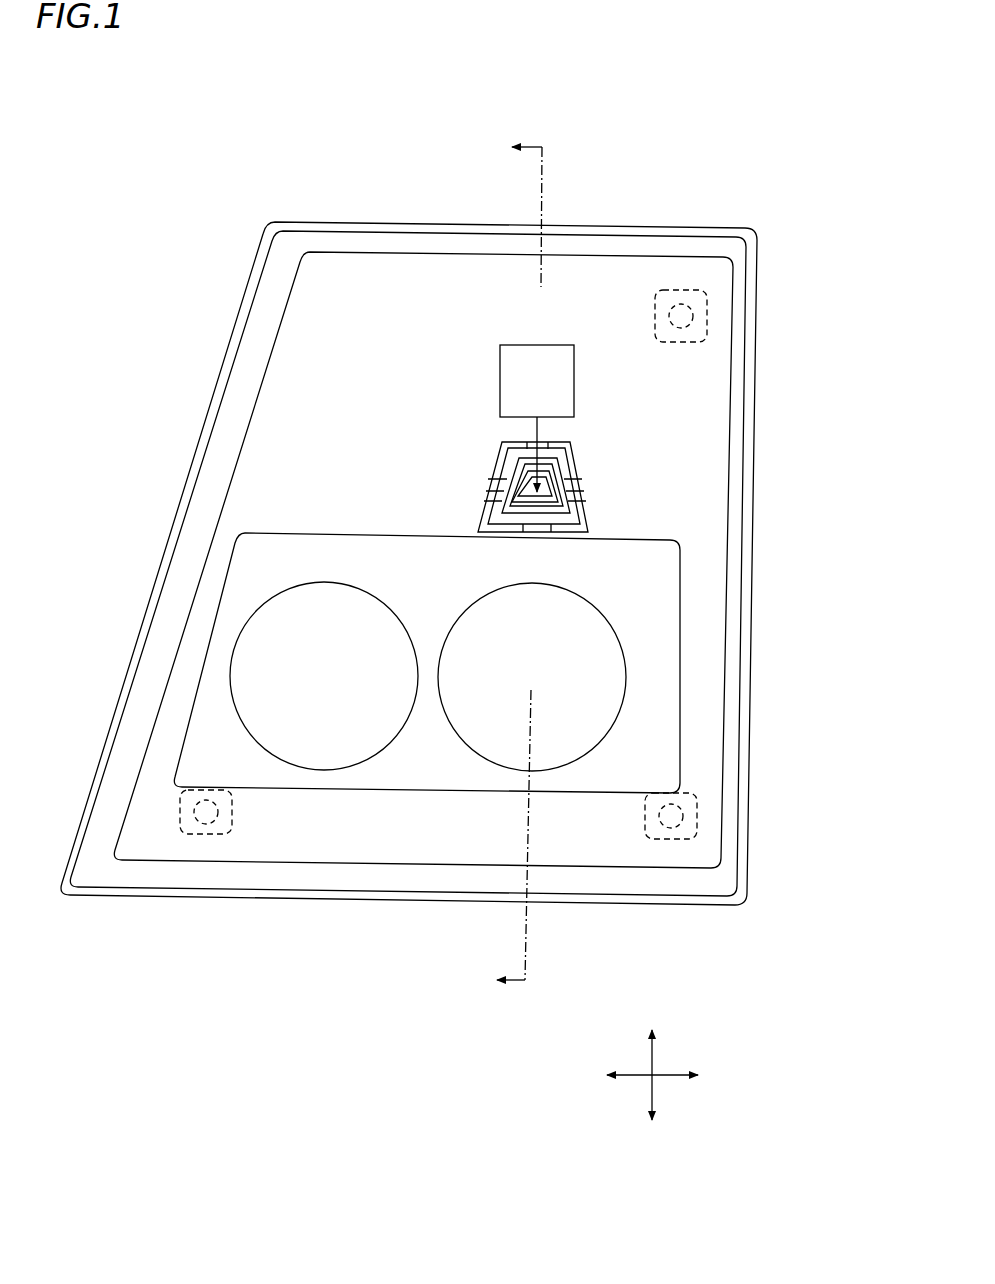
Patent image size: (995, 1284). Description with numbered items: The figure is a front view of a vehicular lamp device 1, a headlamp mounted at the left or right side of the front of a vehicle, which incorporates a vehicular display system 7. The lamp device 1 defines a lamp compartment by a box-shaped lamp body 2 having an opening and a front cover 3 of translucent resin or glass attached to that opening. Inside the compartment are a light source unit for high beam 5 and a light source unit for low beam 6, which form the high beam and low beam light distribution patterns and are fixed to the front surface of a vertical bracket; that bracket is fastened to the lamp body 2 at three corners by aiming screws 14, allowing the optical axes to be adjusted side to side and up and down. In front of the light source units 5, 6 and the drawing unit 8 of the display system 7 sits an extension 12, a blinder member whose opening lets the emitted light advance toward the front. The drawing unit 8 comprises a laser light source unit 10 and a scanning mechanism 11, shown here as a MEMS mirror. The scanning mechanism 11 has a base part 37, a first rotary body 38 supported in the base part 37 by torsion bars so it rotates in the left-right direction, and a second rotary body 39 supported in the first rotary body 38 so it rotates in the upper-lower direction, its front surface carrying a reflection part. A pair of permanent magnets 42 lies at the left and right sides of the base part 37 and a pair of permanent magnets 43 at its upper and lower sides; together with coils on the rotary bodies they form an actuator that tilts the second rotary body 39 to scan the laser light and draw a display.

The vehicular lamp device 1 is at (268, 143).
The lamp body 2 is at (748, 401).
The front cover 3 is at (737, 478).
The light source unit for high beam 5 is at (313, 622).
The light source unit for low beam 6 is at (573, 618).
The vehicular display system 7 is at (592, 293).
The drawing unit 8 is at (427, 365).
The laser light source unit 10 is at (495, 368).
The scanning mechanism 11 is at (537, 492).
The extension 12 is at (300, 352).
The aiming screws 14 is at (680, 305).
The base part 37 is at (568, 530).
The first rotary body 38 is at (578, 510).
The second rotary body 39 is at (547, 470).
The permanent magnets 42 is at (490, 484).
The permanent magnets 43 is at (546, 443).